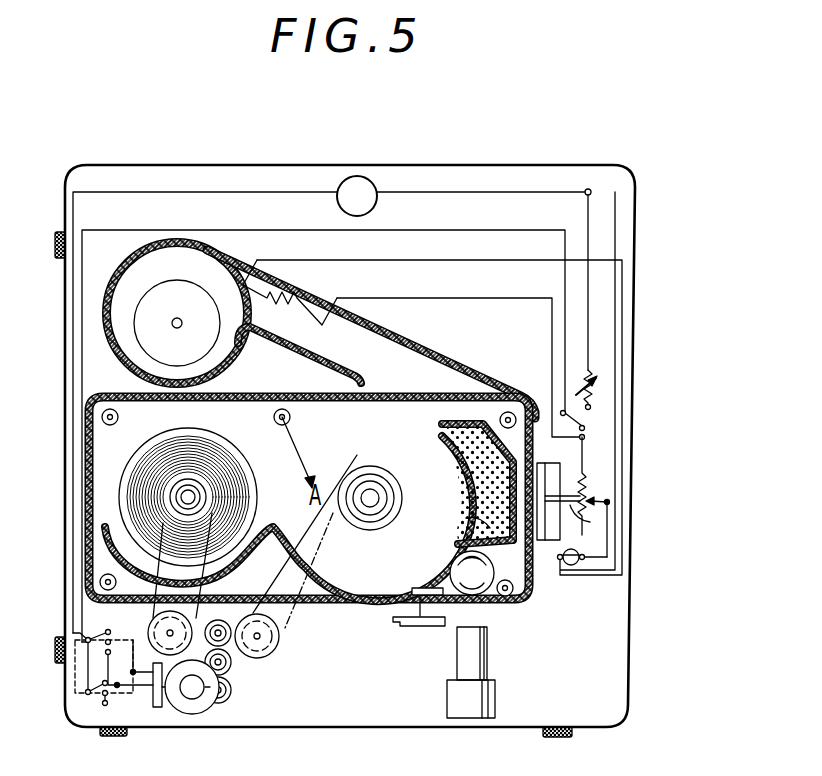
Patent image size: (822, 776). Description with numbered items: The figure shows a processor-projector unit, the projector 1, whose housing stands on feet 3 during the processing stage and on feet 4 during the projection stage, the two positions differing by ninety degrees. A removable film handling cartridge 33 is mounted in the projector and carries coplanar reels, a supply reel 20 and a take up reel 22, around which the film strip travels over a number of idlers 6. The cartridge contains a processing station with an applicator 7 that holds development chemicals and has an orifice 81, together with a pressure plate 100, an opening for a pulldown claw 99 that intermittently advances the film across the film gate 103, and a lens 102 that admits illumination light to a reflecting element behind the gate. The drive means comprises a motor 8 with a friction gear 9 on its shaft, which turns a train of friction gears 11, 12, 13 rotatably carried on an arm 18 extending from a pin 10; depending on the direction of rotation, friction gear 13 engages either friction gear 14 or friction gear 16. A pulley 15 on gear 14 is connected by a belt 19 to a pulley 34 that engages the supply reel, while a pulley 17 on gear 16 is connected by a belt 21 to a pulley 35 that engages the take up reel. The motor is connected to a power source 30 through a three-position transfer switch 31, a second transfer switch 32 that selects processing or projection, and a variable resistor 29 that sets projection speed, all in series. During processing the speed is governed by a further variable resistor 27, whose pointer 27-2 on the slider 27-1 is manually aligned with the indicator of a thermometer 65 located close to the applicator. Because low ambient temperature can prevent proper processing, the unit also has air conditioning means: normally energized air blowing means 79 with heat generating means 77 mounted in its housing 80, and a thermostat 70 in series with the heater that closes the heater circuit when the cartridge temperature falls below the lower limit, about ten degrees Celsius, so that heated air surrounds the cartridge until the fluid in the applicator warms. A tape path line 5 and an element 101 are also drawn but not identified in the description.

The projector 1 is at (441, 177).
The feet 3 is at (120, 736).
The feet 4 is at (55, 252).
The tape path 5 is at (300, 452).
The idlers 6 is at (109, 408).
The applicator 7 is at (474, 458).
The motor 8 is at (176, 700).
The friction gear 9 is at (190, 703).
The pin 10 is at (221, 703).
The friction gear 11 is at (212, 698).
The friction gear 12 is at (231, 668).
The friction gear 13 is at (231, 646).
The friction gear 14 is at (270, 651).
The pulley 15 is at (276, 643).
The friction gear 16 is at (156, 636).
The pulley 17 is at (165, 614).
The arm 18 is at (226, 688).
The belt 19 is at (296, 621).
The supply reel 20 is at (364, 489).
The belt 21 is at (224, 520).
The take up reel 22 is at (196, 490).
The variable resistor 27 is at (590, 490).
The slider 27-1 is at (610, 500).
The pointer 27-2 is at (592, 521).
The variable resistor 29 is at (597, 392).
The power source 30 is at (355, 175).
The transfer switch 31 is at (74, 677).
The transfer switch 32 is at (585, 421).
The cartridge 33 is at (237, 395).
The pulley 34 is at (377, 482).
The pulley 35 is at (206, 494).
The thermometer 65 is at (548, 541).
The thermostat 70 is at (570, 567).
The heat generating means 77 is at (287, 294).
The air blowing means 79 is at (164, 300).
The housing 80 is at (142, 246).
The orifice 81 is at (468, 518).
The pulldown claw 99 is at (420, 627).
The pressure plate 100 is at (435, 619).
The head 101 is at (412, 618).
The lens 102 is at (480, 593).
The film gate 103 is at (488, 664).